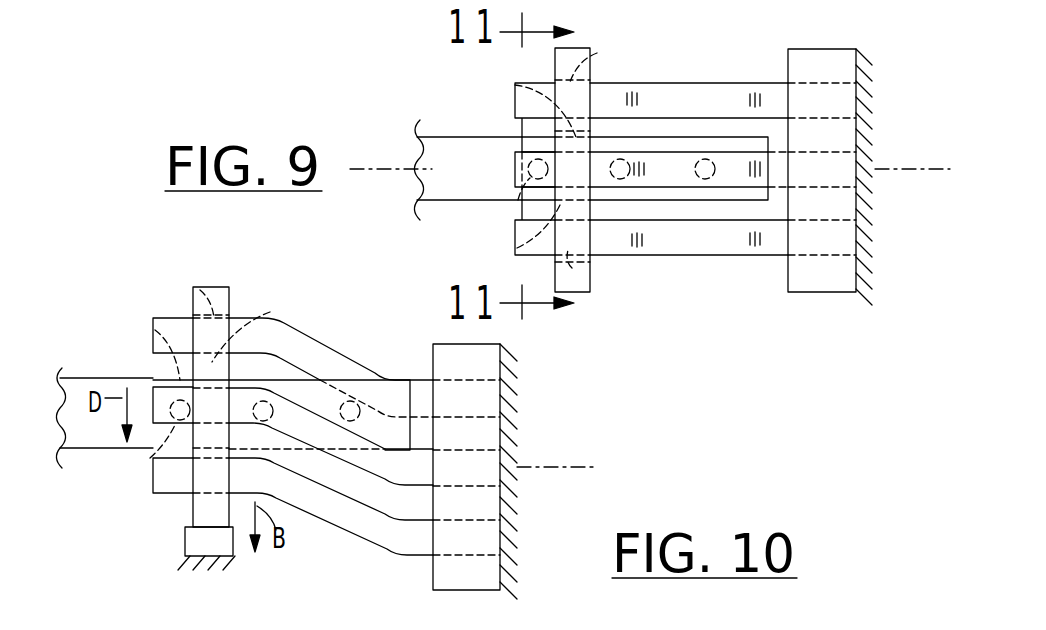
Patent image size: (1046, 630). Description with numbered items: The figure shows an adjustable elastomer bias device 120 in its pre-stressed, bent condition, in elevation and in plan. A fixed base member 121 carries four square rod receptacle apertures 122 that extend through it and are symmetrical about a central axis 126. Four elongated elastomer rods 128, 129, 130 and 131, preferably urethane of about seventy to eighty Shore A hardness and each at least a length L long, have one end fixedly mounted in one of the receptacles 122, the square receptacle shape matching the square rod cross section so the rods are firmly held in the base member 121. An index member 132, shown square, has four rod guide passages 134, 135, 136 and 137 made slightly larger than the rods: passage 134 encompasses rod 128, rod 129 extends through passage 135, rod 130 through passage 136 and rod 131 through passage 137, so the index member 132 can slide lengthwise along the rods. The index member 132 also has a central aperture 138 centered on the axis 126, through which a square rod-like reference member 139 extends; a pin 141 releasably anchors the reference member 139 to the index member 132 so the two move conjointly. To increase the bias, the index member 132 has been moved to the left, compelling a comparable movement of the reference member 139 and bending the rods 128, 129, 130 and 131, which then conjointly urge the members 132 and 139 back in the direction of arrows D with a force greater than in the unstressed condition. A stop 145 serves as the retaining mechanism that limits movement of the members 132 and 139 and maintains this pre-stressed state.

In FIG. 9, the adjustable elastomer bias device 120 is at (730, 66).
In FIG. 10, the adjustable elastomer bias device 120 is at (318, 550).
In FIG. 9, the fixed base member 121 is at (840, 61).
In FIG. 10, the fixed base member 121 is at (485, 575).
In FIG. 9, the rod receptacle apertures 122 is at (843, 118).
In FIG. 10, the rod receptacle apertures 122 is at (487, 415).
In FIG. 9, the central axis 126 is at (372, 172).
In FIG. 10, the central axis 126 is at (588, 467).
In FIG. 9, the elongated elastomer rod 128 is at (691, 98).
In FIG. 10, the elongated elastomer rod 128 is at (158, 403).
In FIG. 9, the elongated elastomer rod 129 is at (702, 242).
In FIG. 9, the elongated elastomer rod 130 is at (520, 150).
In FIG. 10, the elongated elastomer rod 130 is at (375, 532).
In FIG. 10, the elongated elastomer rod 131 is at (337, 363).
In FIG. 9, the index member 132 is at (576, 48).
In FIG. 10, the index member 132 is at (210, 288).
In FIG. 9, the rod guide passage 134 is at (597, 53).
In FIG. 10, the rod guide passage 134 is at (270, 312).
In FIG. 9, the rod guide passage 135 is at (572, 268).
In FIG. 9, the rod guide passage 136 is at (515, 88).
In FIG. 10, the rod guide passage 136 is at (192, 512).
In FIG. 10, the rod guide passage 137 is at (200, 290).
In FIG. 9, the central aperture 138 is at (517, 248).
In FIG. 10, the central aperture 138 is at (155, 330).
In FIG. 9, the reference member 139 is at (443, 198).
In FIG. 10, the reference member 139 is at (92, 435).
In FIG. 9, the pin 141 is at (518, 200).
In FIG. 10, the pin 141 is at (150, 458).
In FIG. 10, the stop 145 is at (185, 542).